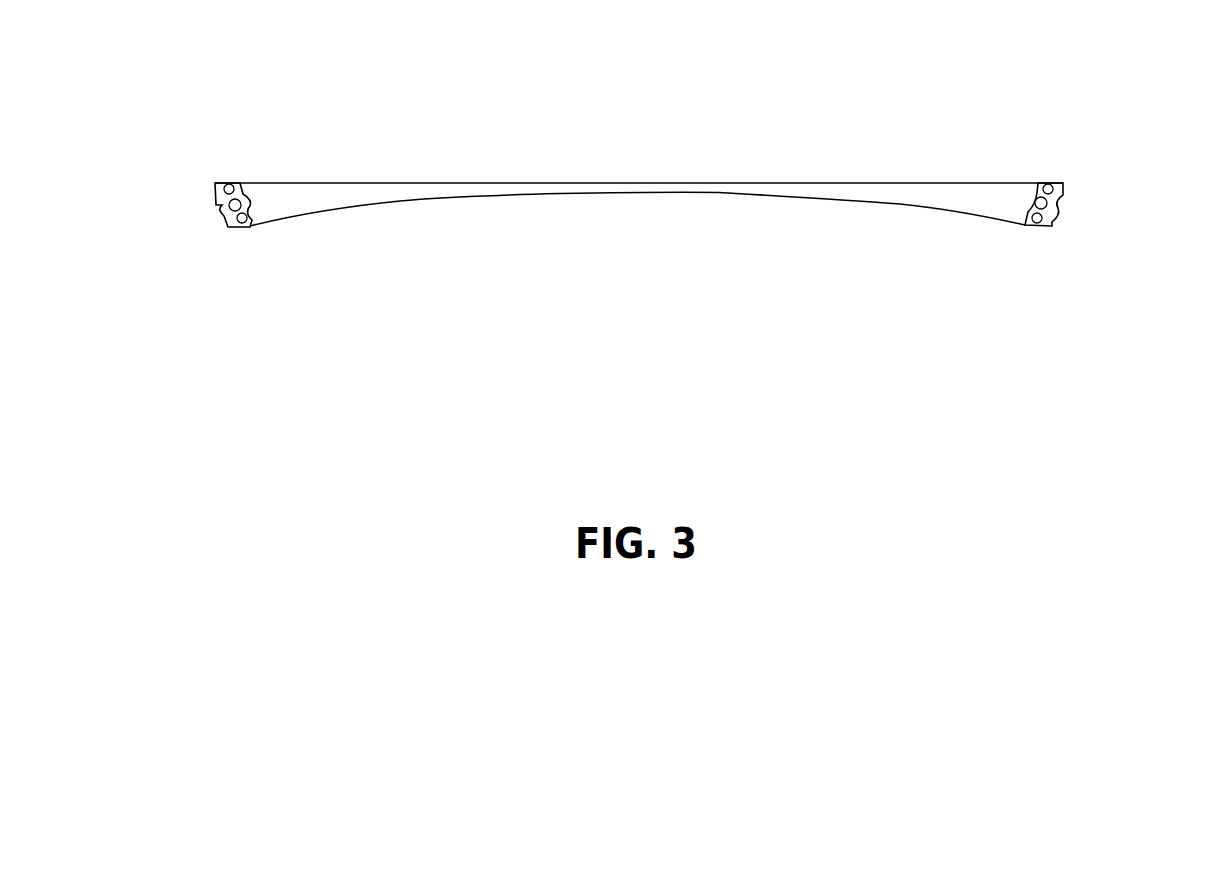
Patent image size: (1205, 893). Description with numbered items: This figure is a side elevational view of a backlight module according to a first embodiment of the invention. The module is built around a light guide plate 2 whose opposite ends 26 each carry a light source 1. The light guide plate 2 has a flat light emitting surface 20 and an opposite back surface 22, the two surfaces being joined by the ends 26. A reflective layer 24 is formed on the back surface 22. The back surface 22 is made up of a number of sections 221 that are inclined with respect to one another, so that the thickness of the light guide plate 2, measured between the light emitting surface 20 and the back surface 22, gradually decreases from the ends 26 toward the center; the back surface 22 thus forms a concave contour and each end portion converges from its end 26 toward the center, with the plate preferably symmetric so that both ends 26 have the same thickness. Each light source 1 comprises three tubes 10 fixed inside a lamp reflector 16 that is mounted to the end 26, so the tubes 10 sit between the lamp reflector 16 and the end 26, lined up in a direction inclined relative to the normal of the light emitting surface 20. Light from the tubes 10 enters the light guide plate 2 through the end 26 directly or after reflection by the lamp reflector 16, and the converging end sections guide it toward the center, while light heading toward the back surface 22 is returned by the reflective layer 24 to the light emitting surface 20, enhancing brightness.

The light source 1 is at (223, 177).
The light tube 10 is at (215, 185).
The lamp reflector 16 is at (217, 205).
The light guide plate 2 is at (978, 190).
The light emitting surface 20 is at (902, 183).
The back surface 22 is at (317, 213).
The section 221 is at (507, 199).
The reflective layer 24 is at (952, 208).
The end 26 is at (247, 203).